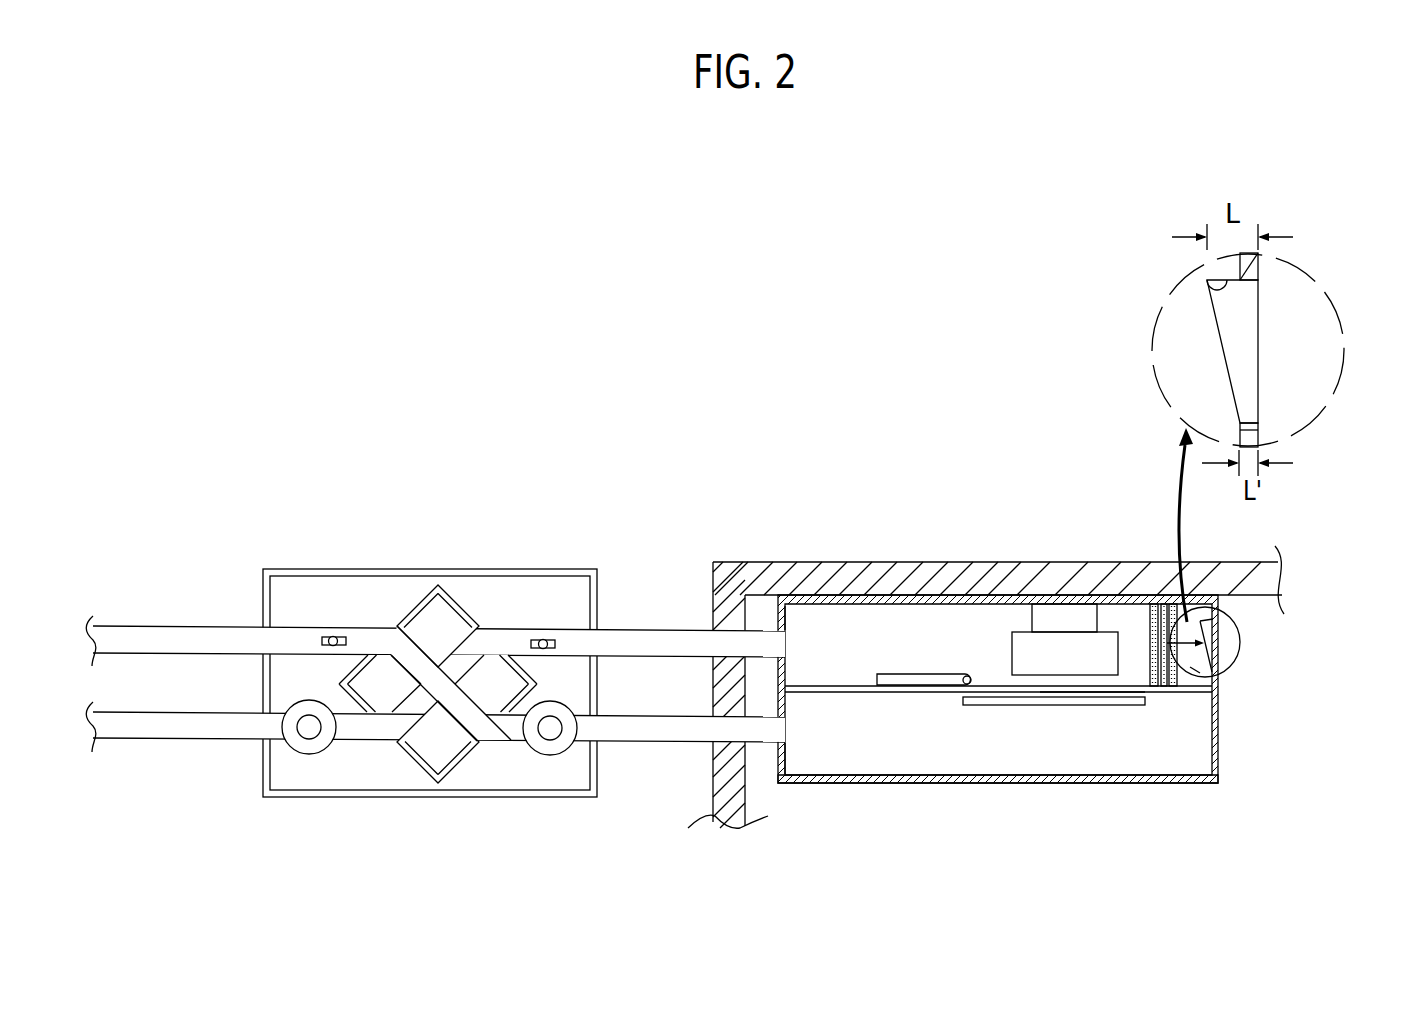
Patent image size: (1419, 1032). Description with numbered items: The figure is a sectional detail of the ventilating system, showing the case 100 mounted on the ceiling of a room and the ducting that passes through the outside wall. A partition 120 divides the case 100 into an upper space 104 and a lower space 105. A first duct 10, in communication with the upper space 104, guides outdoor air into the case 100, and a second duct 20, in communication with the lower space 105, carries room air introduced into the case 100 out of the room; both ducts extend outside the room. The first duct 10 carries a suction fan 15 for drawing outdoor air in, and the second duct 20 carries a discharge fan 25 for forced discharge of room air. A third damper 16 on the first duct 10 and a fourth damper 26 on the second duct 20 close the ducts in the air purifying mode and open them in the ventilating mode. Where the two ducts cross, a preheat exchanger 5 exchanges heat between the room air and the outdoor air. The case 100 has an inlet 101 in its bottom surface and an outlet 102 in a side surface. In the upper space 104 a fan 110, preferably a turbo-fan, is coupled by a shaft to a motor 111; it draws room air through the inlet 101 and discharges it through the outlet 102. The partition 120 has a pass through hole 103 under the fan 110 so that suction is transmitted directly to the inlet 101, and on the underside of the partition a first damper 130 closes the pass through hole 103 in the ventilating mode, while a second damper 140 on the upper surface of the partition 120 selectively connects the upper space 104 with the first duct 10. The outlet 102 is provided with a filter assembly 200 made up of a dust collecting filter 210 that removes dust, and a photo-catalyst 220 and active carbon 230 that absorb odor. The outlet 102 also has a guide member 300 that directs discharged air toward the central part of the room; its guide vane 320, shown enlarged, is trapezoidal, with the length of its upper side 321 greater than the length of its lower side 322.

The preheat exchanger 5 is at (443, 590).
The first duct 10 is at (648, 630).
The suction fan 15 is at (309, 754).
The third damper 16 is at (543, 639).
The second duct 20 is at (646, 745).
The discharge fan 25 is at (550, 755).
The fourth damper 26 is at (333, 636).
The case 100 is at (880, 785).
The inlet 101 is at (1085, 785).
The outlet 102 is at (1260, 262).
The pass through hole 103 is at (1070, 694).
The upper space 104 is at (800, 622).
The lower space 105 is at (812, 762).
The fan 110 is at (1022, 646).
The motor 111 is at (1085, 606).
The partition 120 is at (855, 685).
The first damper 130 is at (965, 706).
The second damper 140 is at (905, 673).
The filter assembly 200 is at (1223, 768).
The dust collecting filter 210 is at (1152, 688).
The photo-catalyst 220 is at (1164, 688).
The active carbon 230 is at (1174, 688).
The guide member 300 is at (1222, 647).
The guide vane 320 is at (1245, 355).
The upper side 321 is at (1210, 284).
The lower side 322 is at (1262, 422).